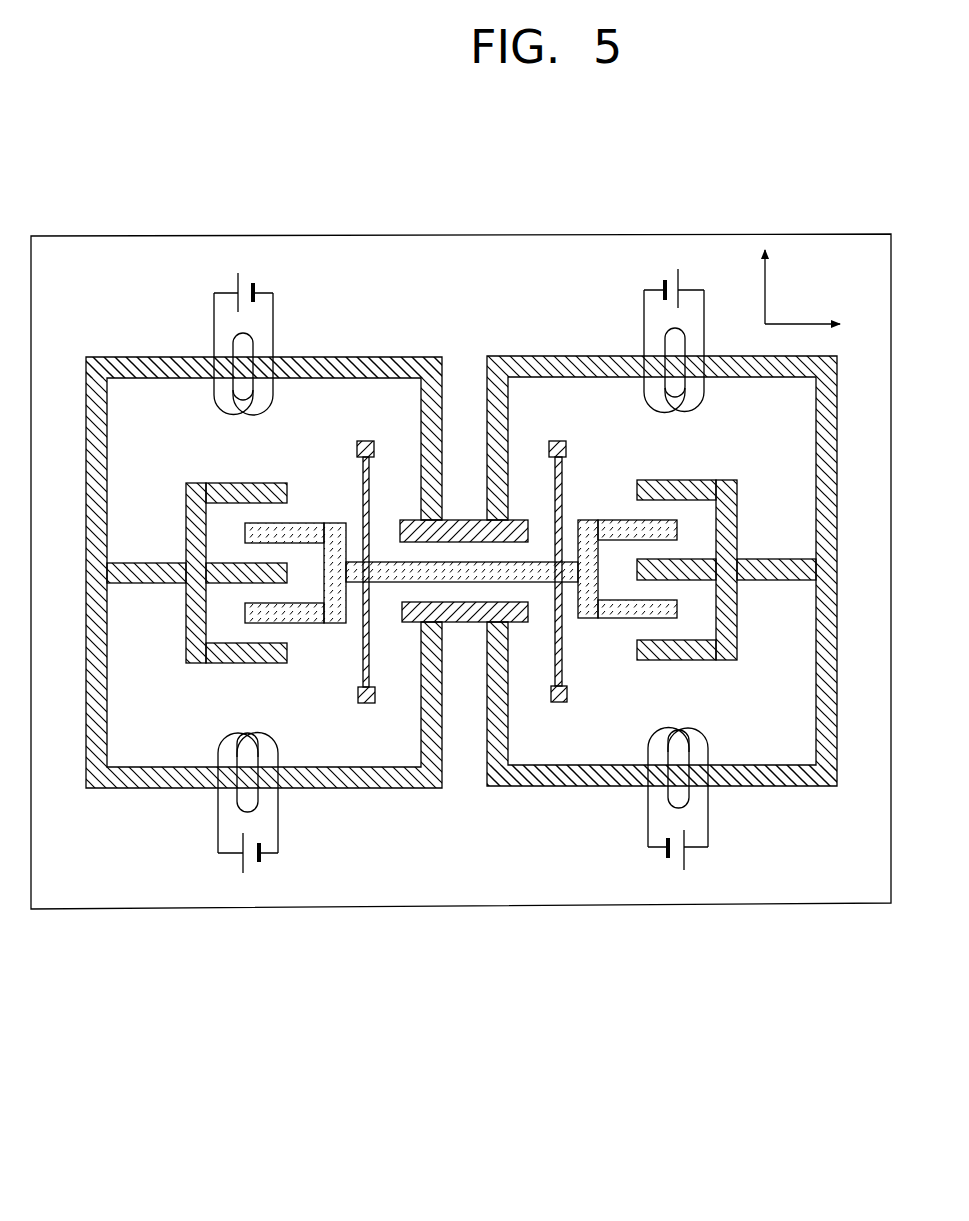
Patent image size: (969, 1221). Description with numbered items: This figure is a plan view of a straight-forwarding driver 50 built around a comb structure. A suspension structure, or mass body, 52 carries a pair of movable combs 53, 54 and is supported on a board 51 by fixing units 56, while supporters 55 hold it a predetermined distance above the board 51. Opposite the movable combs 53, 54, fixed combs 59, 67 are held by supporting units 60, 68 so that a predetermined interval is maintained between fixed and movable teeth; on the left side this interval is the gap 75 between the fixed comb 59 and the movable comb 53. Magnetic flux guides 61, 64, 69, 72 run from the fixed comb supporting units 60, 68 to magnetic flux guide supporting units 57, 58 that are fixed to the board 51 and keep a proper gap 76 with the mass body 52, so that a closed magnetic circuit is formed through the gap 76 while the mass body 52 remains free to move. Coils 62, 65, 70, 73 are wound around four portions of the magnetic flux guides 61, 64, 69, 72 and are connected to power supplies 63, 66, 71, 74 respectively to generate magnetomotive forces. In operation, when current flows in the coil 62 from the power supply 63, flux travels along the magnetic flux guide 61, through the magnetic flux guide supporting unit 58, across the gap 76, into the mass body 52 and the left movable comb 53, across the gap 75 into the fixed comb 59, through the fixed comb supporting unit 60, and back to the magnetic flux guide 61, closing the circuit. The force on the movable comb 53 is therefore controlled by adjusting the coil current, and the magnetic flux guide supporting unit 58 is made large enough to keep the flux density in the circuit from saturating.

The micro-actuator device 50 is at (601, 931).
The board 51 is at (200, 910).
The suspension structure (mass body) 52 is at (543, 582).
The movable comb 53 is at (312, 612).
The movable comb 54 is at (605, 520).
The supporter 55 is at (370, 663).
The fixing unit 56 is at (363, 440).
The magnetic flux guide supporting unit 57 is at (470, 520).
The magnetic flux guide supporting unit 58 is at (457, 622).
The fixed comb 59 is at (242, 483).
The supporting unit 60 is at (197, 569).
The magnetic flux guide 61 is at (97, 735).
The coil 62 is at (260, 798).
The power supply 63 is at (267, 860).
The magnetic flux guide 64 is at (113, 368).
The coil 65 is at (214, 358).
The power supply 66 is at (238, 281).
The fixed comb 67 is at (690, 480).
The supporting unit 68 is at (737, 645).
The magnetic flux guide 69 is at (795, 772).
The coil 70 is at (693, 798).
The power supply 71 is at (692, 860).
The magnetic flux guide 72 is at (837, 487).
The coil 73 is at (665, 357).
The power supply 74 is at (665, 283).
The gap 75 is at (270, 633).
The gap 76 is at (482, 592).